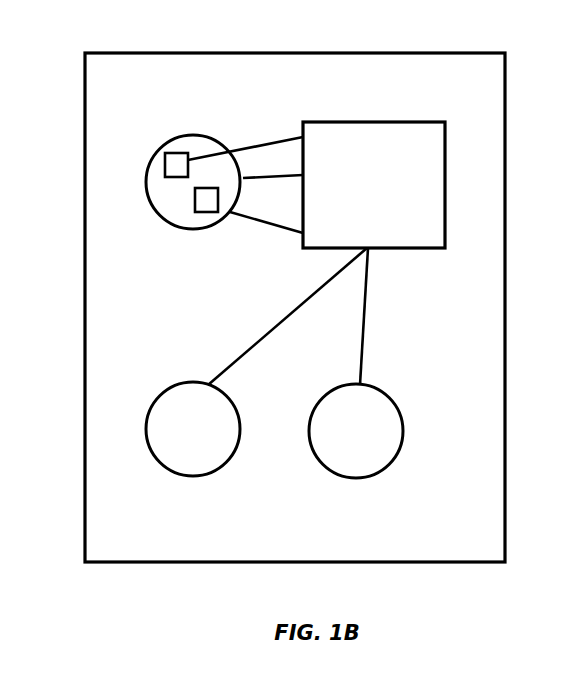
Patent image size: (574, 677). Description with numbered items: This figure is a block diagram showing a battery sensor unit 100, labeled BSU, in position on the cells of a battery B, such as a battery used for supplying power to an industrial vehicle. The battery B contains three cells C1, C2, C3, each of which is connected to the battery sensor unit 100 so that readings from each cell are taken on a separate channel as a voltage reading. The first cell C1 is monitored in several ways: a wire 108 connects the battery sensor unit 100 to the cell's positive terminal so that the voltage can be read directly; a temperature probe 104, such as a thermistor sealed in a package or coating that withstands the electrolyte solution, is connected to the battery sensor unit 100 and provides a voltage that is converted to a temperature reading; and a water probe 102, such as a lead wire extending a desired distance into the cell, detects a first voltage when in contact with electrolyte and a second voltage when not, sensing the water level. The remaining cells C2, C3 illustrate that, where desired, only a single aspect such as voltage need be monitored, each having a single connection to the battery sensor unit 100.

The battery B is at (85, 528).
The battery sensor unit 100 is at (374, 185).
The cell C1 is at (167, 222).
The cell C2 is at (168, 468).
The cell C3 is at (328, 470).
The water probe 102 is at (193, 212).
The temperature probe 104 is at (185, 152).
The wire 108 is at (255, 182).